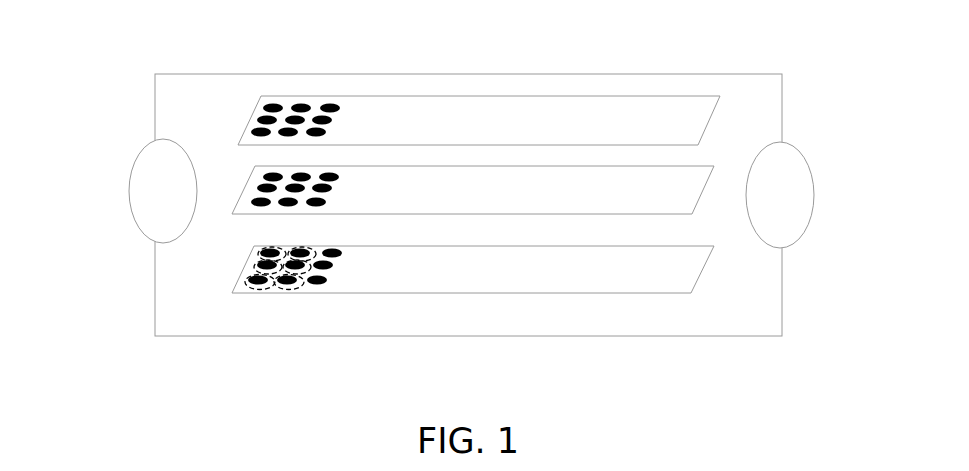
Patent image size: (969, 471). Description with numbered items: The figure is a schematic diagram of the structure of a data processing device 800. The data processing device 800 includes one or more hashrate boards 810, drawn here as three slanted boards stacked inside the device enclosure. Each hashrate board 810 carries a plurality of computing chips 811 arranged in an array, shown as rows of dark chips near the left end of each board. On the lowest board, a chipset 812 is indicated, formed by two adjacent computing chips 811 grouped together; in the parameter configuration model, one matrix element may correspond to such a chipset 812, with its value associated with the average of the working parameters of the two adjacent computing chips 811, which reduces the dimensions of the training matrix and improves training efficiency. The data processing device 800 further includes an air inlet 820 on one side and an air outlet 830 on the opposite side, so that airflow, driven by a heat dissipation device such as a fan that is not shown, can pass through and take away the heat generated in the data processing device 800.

The data processing device 800 is at (471, 205).
The hashrate board 810 is at (468, 97).
The computing chip 811 is at (275, 105).
The chipset 812 is at (250, 283).
The air inlet 820 is at (129, 192).
The air outlet 830 is at (814, 197).